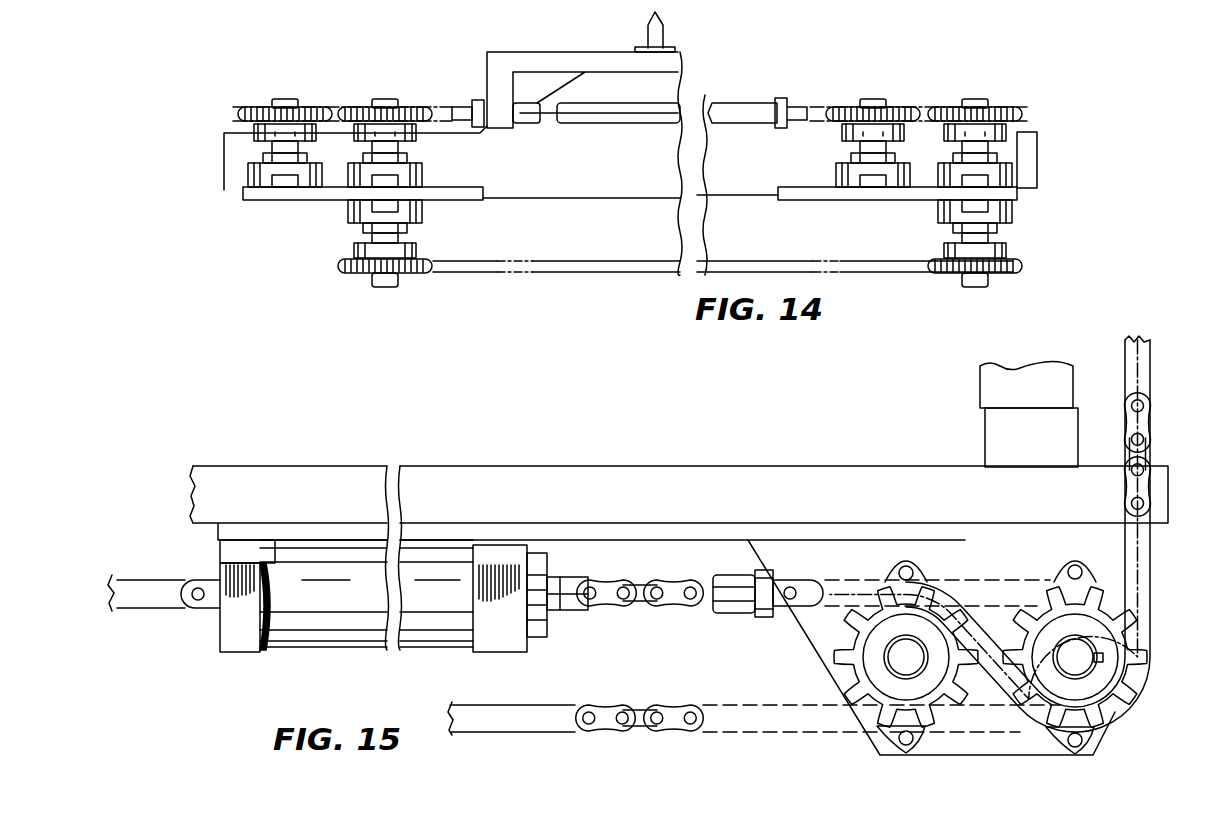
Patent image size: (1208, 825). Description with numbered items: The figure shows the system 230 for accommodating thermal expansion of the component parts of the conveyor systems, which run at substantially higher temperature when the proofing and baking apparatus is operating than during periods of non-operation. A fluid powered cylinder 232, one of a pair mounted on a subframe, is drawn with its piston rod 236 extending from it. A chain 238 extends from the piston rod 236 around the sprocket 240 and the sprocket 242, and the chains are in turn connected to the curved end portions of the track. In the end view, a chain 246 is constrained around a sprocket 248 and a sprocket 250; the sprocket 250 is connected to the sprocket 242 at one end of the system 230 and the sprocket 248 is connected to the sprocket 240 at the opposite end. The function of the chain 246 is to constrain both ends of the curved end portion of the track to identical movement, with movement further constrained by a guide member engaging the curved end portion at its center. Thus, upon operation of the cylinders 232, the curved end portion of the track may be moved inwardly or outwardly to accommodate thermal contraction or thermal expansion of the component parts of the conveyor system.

In FIG. 15, the system for accommodating thermal expansion 230 is at (604, 452).
In FIG. 15, the fluid powered cylinder 232 is at (360, 642).
In FIG. 14, the piston rod 236 is at (525, 117).
In FIG. 15, the piston rod 236 is at (723, 582).
In FIG. 14, the chain 238 is at (831, 107).
In FIG. 15, the chain 238 is at (826, 582).
In FIG. 14, the sprocket 240 is at (904, 106).
In FIG. 15, the sprocket 240 is at (830, 653).
In FIG. 14, the sprocket 242 is at (1004, 106).
In FIG. 15, the sprocket 242 is at (1110, 645).
In FIG. 14, the chain 246 is at (547, 273).
In FIG. 15, the chain 246 is at (618, 705).
In FIG. 14, the sprocket 248 is at (350, 274).
In FIG. 14, the sprocket 250 is at (1014, 274).